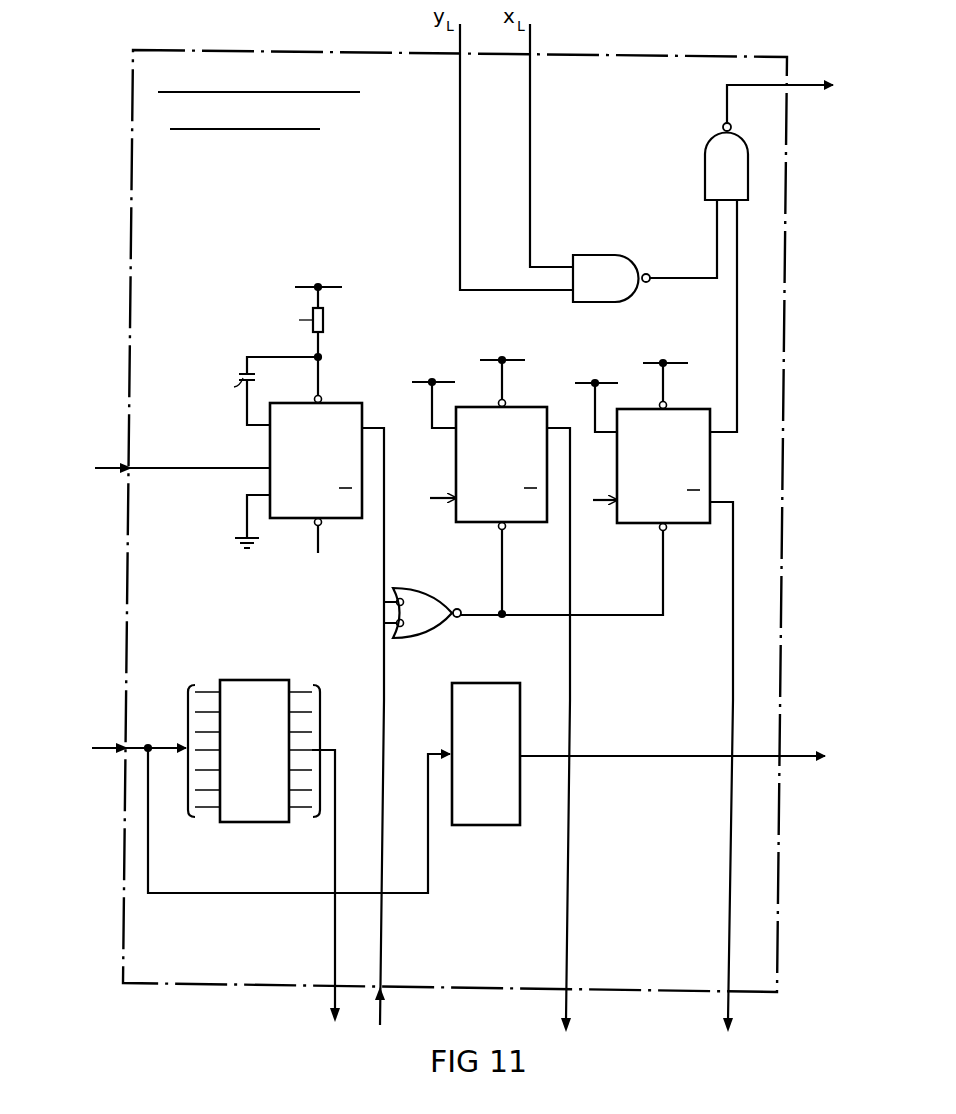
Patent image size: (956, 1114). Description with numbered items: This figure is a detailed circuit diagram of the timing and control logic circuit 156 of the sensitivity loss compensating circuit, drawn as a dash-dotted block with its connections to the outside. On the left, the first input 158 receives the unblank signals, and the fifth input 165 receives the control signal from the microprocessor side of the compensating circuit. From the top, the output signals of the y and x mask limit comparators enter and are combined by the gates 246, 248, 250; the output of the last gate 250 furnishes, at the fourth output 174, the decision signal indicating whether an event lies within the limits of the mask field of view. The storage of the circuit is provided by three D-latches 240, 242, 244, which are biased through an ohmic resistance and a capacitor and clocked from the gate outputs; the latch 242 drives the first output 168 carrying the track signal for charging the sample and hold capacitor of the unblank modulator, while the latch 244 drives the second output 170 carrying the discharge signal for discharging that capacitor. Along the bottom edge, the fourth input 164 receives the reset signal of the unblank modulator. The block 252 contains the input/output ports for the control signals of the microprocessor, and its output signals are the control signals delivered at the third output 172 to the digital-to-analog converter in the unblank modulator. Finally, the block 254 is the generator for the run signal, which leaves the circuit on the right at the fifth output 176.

The timing and control logic circuit 156 is at (668, 62).
The first input 158 is at (125, 475).
The fourth input 164 is at (384, 991).
The fifth input 165 is at (124, 754).
The first output 168 is at (568, 991).
The second output 170 is at (731, 994).
The third output 172 is at (331, 989).
The fourth output 174 is at (789, 90).
The fifth output 176 is at (781, 762).
The D-latch 240 is at (266, 461).
The D-latch 242 is at (464, 465).
The D-latch 244 is at (697, 462).
The gate 246 is at (420, 598).
The gate 248 is at (607, 266).
The gate 250 is at (712, 167).
The input/output ports 252 is at (253, 684).
The RUN signal generator 254 is at (488, 686).